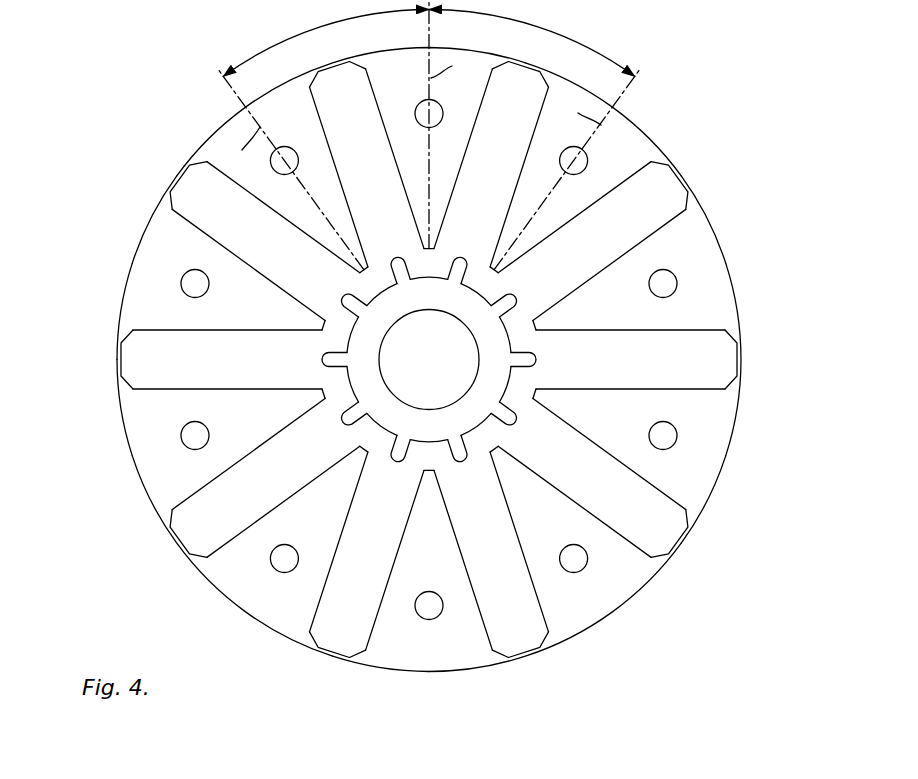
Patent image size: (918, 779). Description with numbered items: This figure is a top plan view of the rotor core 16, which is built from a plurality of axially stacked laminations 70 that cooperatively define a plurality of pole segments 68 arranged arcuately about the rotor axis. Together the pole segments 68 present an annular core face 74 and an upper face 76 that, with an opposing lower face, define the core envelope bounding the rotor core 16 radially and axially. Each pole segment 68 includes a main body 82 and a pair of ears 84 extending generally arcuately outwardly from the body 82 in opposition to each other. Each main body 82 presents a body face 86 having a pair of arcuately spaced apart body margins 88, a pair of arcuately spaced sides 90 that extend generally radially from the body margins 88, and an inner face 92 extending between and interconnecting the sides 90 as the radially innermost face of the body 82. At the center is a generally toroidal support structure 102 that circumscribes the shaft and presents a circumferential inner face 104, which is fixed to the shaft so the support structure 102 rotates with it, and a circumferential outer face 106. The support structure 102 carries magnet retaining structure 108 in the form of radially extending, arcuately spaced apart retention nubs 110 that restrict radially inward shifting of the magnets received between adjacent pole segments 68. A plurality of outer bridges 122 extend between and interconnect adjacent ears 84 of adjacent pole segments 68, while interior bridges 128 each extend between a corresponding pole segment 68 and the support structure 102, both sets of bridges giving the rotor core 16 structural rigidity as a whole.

The rotor core 16 is at (742, 97).
The pole segment 68 is at (168, 453).
The lamination 70 is at (738, 262).
The annular core face 74 is at (633, 118).
The upper face 76 is at (622, 147).
The main body 82 is at (440, 568).
The ear 84 is at (365, 653).
The body face 86 is at (130, 263).
The body margin 88 is at (147, 225).
The side 90 is at (413, 503).
The inner face 92 is at (433, 252).
The support structure 102 is at (473, 412).
The inner face 104 is at (473, 375).
The outer face 106 is at (513, 345).
The magnet retaining structure 108 is at (395, 250).
The retention nub 110 is at (370, 280).
The outer bridge 122 is at (683, 540).
The interior bridge 128 is at (338, 373).